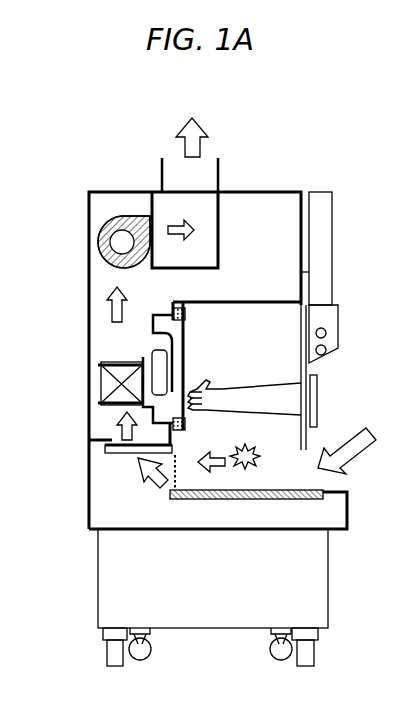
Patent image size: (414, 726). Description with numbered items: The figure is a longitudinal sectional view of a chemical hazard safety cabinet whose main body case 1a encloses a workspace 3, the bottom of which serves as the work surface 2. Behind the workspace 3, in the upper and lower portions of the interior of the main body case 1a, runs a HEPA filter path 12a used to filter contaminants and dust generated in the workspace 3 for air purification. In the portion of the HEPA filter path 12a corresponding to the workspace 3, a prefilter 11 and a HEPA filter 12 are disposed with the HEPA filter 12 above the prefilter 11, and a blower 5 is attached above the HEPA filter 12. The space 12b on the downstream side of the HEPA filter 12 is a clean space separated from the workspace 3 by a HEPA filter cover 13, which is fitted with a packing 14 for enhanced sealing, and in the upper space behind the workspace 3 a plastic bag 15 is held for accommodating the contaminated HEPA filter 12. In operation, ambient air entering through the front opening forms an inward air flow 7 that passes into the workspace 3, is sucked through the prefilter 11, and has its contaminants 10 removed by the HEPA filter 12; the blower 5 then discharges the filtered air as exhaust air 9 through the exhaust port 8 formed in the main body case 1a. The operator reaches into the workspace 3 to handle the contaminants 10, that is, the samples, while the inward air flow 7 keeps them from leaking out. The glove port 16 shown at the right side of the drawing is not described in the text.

The main body case 1a is at (231, 192).
The work surface 2 is at (192, 500).
The workspace 3 is at (285, 317).
The blower 5 is at (106, 233).
The inward air flow 7 is at (328, 470).
The exhaust port 8 is at (160, 166).
The exhaust air 9 is at (173, 133).
The contaminants 10 is at (247, 500).
The prefilter 11 is at (126, 455).
The HEPA filter 12 is at (100, 385).
The HEPA filter path 12a is at (110, 470).
The space on the downstream side of the HEPA filter 12b is at (101, 331).
The HEPA filter cover 13 is at (181, 357).
The packing 14 is at (186, 310).
The plastic bag 15 is at (153, 350).
The glove port 16 is at (293, 397).